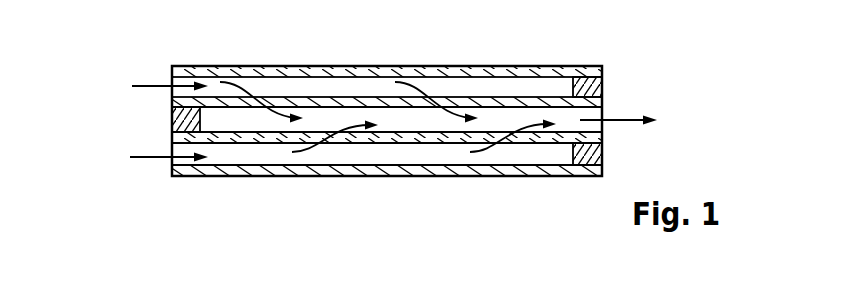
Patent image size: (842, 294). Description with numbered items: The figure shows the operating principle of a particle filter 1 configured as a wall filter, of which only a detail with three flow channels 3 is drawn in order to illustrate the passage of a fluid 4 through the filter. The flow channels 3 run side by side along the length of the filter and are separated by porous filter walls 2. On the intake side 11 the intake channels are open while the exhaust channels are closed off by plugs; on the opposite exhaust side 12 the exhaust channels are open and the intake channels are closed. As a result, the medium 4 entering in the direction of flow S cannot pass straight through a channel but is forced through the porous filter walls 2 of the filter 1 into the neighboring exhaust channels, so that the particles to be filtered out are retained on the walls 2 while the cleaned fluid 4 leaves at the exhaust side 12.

The particle filter 1 is at (626, 61).
The porous filter walls 2 is at (390, 137).
The flow channels 3 is at (438, 153).
The fluid 4 is at (495, 128).
The intake side 11 is at (148, 121).
The exhaust side 12 is at (626, 143).
The direction of flow S is at (160, 158).